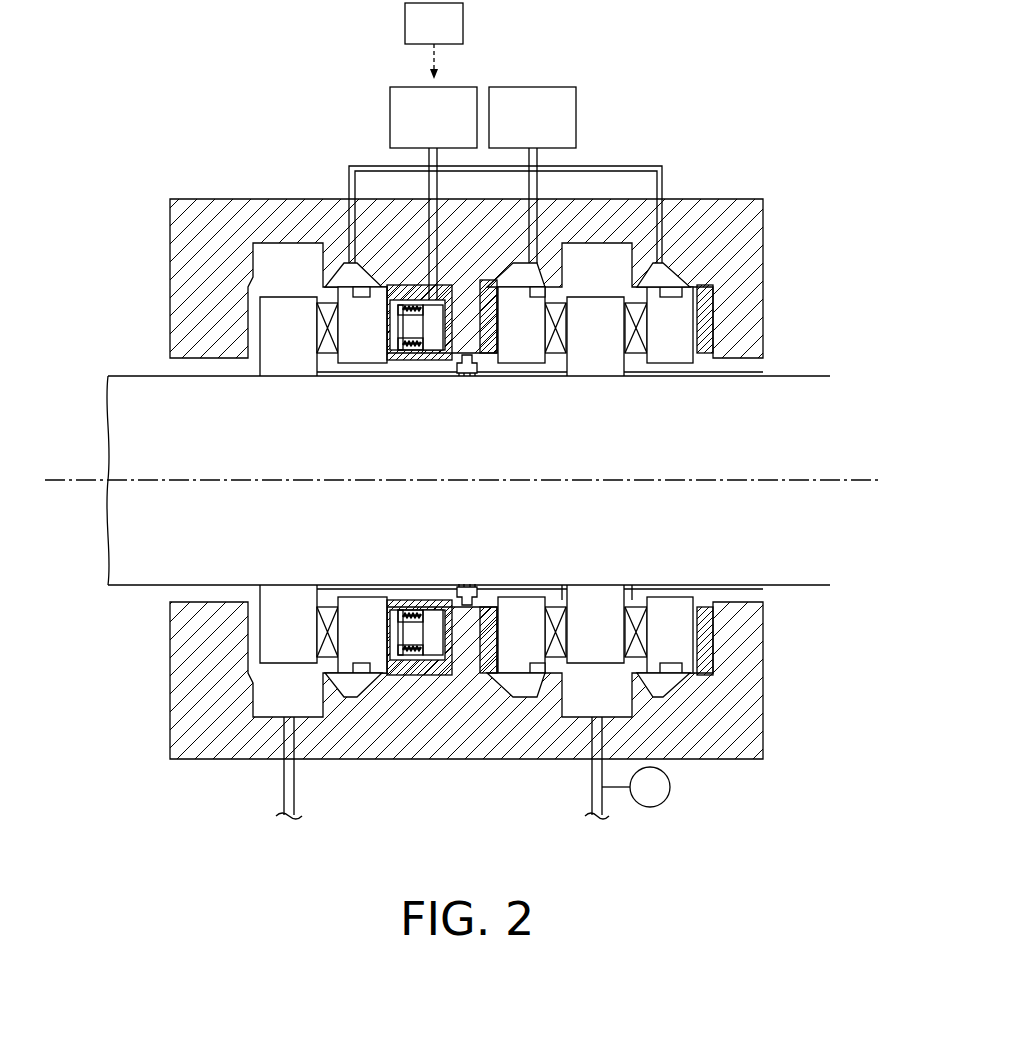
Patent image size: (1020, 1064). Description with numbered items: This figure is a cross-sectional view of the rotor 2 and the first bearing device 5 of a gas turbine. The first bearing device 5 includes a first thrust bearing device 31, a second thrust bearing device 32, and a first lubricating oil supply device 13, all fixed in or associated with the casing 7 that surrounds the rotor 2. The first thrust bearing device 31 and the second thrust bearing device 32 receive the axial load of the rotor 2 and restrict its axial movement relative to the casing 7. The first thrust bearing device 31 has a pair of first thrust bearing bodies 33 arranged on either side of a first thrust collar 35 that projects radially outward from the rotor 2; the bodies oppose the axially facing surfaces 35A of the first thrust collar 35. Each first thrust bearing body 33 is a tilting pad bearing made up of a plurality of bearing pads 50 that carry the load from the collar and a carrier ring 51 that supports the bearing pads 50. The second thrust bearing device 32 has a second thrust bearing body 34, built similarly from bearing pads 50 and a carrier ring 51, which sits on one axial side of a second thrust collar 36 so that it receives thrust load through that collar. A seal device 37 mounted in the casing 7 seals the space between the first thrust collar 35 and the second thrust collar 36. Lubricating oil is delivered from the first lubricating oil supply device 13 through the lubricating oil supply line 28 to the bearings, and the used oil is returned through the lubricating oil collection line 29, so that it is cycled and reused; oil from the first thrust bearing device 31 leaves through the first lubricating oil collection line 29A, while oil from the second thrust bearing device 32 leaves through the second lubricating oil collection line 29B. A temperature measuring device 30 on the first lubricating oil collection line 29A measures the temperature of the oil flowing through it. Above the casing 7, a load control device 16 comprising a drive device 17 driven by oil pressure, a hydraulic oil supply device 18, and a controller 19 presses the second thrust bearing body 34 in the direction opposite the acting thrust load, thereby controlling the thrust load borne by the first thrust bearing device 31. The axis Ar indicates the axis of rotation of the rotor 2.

The rotor 2 is at (117, 420).
The first bearing device 5 is at (676, 112).
The casing 7 is at (178, 660).
The first lubricating oil supply device 13 is at (540, 87).
The load control device 16 is at (461, 170).
The drive device 17 is at (451, 274).
The hydraulic oil supply device 18 is at (390, 95).
The controller 19 is at (405, 20).
The lubricating oil supply line 28 is at (620, 165).
The lubricating oil collection line 29 is at (431, 781).
The first lubricating oil collection line 29A is at (600, 798).
The second lubricating oil collection line 29B is at (284, 780).
The temperature measuring device 30 is at (672, 787).
The first thrust bearing device 31 is at (682, 261).
The second thrust bearing device 32 is at (320, 228).
The first thrust bearing bodies 33 is at (680, 688).
The second thrust bearing body 34 is at (354, 685).
The first thrust collar 35 is at (580, 655).
The surfaces 35A is at (624, 585).
The second thrust collar 36 is at (268, 323).
The seal device 37 is at (466, 378).
The bearing pads 50 is at (322, 300).
The carrier ring 51 is at (688, 627).
The axis of rotation Ar is at (63, 483).